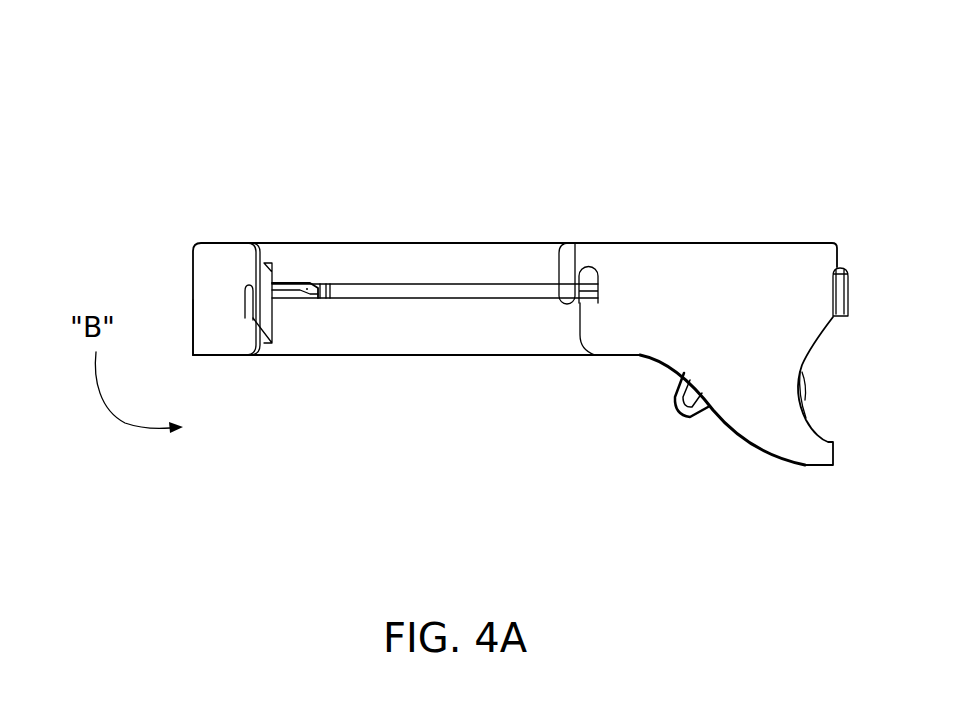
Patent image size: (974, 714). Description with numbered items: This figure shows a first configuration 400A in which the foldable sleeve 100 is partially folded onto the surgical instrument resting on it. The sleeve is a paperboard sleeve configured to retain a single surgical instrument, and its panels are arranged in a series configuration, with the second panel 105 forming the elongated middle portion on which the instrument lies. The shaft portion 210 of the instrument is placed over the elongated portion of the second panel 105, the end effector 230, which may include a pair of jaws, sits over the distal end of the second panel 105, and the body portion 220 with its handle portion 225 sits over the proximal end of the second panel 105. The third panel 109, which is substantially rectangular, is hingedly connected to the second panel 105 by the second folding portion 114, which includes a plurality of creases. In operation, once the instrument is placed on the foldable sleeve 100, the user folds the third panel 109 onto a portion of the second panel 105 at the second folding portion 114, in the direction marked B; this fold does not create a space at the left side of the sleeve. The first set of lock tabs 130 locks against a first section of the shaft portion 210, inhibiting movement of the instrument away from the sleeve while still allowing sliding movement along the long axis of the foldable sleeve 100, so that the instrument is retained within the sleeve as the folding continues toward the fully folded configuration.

The first configuration 400A is at (592, 96).
The foldable sleeve 100 is at (362, 385).
The second panel 105 is at (622, 357).
The third panel 109 is at (220, 350).
The second folding portion 114 is at (191, 268).
The first set of lock tabs 130 is at (584, 306).
The shaft portion 210 is at (440, 292).
The body portion 220 is at (845, 292).
The handle portion 225 is at (805, 388).
The end effector 230 is at (297, 291).